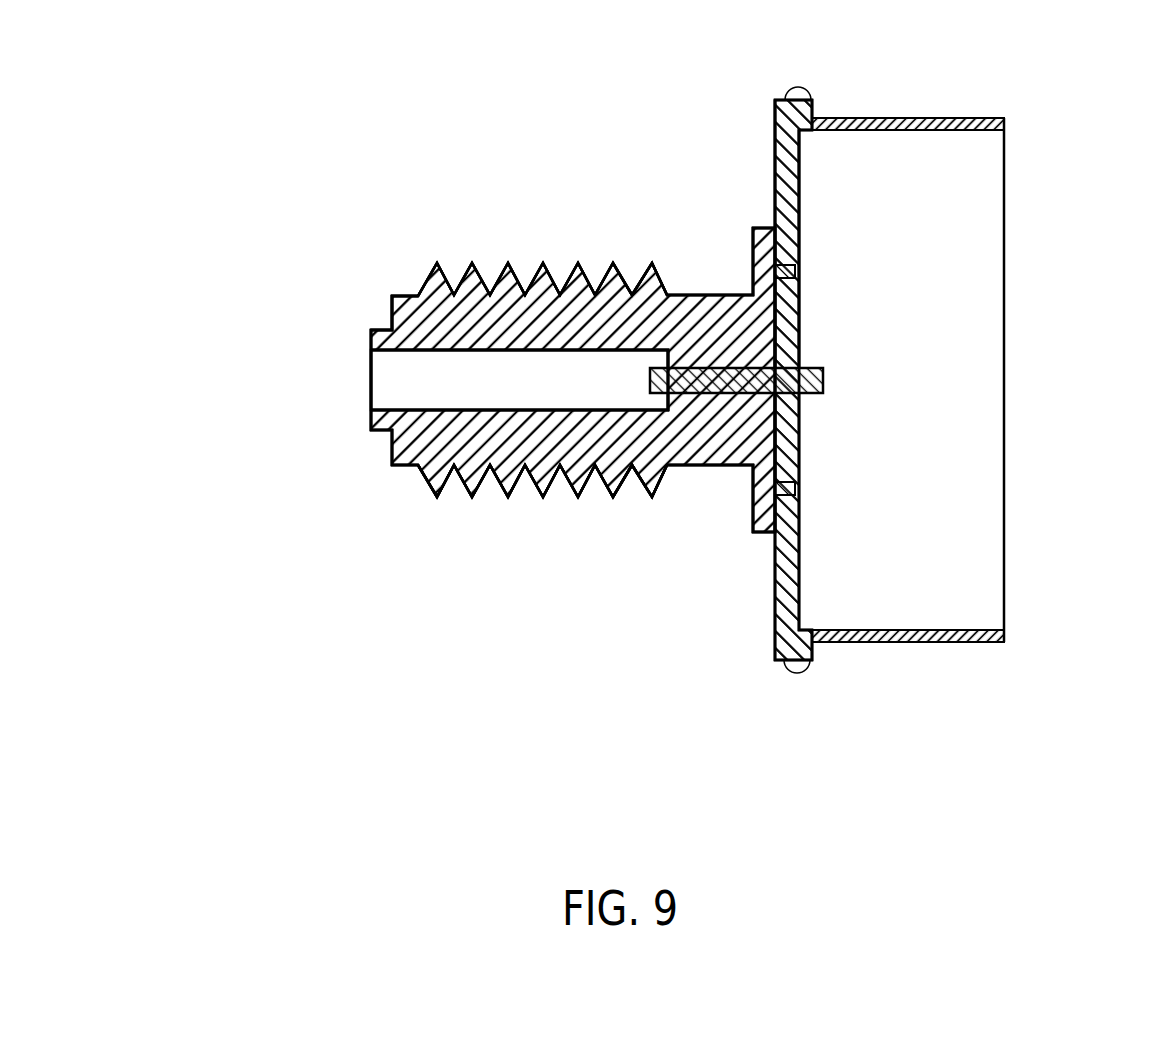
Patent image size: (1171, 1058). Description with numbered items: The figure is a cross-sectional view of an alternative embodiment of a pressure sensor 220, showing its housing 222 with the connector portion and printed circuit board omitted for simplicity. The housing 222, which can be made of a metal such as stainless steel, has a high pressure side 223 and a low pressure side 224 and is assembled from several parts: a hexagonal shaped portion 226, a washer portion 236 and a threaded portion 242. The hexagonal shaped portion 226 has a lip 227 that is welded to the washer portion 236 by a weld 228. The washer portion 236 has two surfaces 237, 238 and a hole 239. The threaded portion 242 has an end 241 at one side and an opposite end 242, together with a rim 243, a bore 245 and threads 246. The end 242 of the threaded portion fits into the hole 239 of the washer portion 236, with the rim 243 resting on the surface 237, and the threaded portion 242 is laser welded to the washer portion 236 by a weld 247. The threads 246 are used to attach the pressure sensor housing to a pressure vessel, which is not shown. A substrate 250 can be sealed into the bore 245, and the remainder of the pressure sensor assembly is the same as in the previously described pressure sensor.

The pressure sensor 220 is at (312, 222).
The housing 222 is at (618, 215).
The high pressure side 223 is at (209, 370).
The low pressure side 224 is at (1133, 165).
The hexagonal shaped portion 226 is at (889, 115).
The lip 227 is at (812, 655).
The weld 228 is at (802, 673).
The washer portion 236 is at (770, 605).
The surface 237 is at (772, 147).
The surface 238 is at (800, 183).
The hole 239 is at (800, 260).
The end 241 is at (392, 305).
The threaded portion 242 is at (402, 293).
The rim 243 is at (752, 265).
The bore 245 is at (417, 383).
The threads 246 is at (540, 492).
The weld 247 is at (773, 542).
The substrate 250 is at (832, 385).